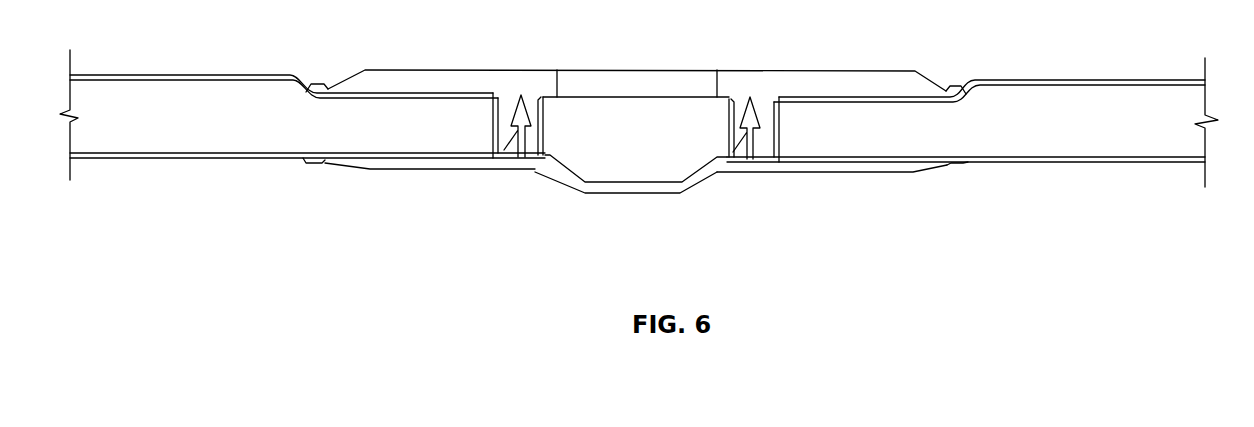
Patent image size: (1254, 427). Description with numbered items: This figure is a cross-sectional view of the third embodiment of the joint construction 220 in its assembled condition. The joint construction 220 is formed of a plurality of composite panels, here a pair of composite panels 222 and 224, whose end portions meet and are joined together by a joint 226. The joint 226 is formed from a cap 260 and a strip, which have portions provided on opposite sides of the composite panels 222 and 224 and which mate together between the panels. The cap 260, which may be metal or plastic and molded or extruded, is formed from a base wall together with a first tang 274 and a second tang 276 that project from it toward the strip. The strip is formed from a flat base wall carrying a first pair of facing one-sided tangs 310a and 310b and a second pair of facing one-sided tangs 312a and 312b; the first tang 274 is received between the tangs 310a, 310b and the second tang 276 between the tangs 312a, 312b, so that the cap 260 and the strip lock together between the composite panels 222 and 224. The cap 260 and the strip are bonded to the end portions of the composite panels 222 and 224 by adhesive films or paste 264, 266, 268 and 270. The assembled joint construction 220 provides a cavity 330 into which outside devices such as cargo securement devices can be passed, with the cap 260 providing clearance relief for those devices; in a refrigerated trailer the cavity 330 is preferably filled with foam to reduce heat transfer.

The joint construction 220 is at (793, 51).
The composite panel 222 is at (143, 73).
The composite panel 224 is at (1098, 76).
The joint 226 is at (702, 192).
The cap 260 is at (804, 179).
The adhesive film or paste 264 is at (316, 165).
The adhesive film or paste 266 is at (954, 168).
The adhesive film or paste 268 is at (318, 82).
The adhesive film or paste 270 is at (958, 86).
The first tang 274 is at (527, 139).
The second tang 276 is at (738, 138).
The one-sided tang 310a is at (496, 107).
The one-sided tang 310b is at (551, 108).
The one-sided tang 312a is at (730, 107).
The one-sided tang 312b is at (777, 108).
The cavity 330 is at (622, 172).